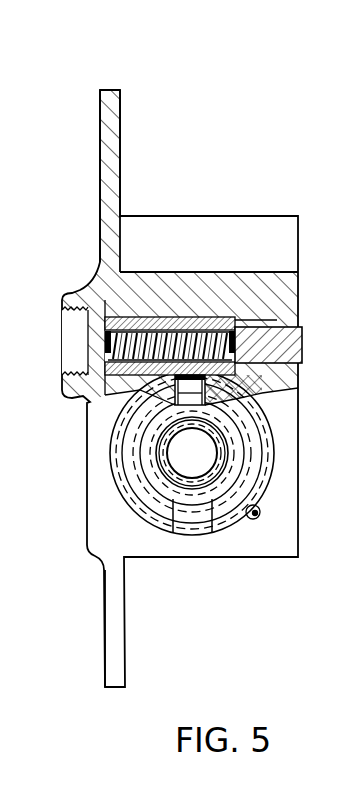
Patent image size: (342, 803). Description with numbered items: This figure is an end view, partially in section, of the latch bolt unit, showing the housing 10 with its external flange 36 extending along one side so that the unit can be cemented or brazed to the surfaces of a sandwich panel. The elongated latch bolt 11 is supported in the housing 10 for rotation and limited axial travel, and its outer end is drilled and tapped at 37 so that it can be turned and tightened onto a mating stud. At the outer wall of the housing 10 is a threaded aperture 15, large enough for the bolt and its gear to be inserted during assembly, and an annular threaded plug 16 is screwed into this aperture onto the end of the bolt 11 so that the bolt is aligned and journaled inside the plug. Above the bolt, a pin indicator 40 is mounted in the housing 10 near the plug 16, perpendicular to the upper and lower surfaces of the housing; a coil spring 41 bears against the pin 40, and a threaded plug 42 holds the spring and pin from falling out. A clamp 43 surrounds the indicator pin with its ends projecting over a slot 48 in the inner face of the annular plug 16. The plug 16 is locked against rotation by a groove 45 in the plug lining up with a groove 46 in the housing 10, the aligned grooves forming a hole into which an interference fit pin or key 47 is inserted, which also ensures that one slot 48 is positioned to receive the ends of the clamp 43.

The housing 10 is at (117, 622).
The latch bolt 11 is at (158, 480).
The threaded aperture 15 is at (227, 527).
The annular threaded plug 16 is at (167, 513).
The external flange 36 is at (114, 132).
The drilled and tapped outer end 37 is at (212, 445).
The pin indicator 40 is at (298, 350).
The coil spring 41 is at (213, 325).
The threaded plug 42 is at (75, 364).
The clamp 43 is at (178, 320).
The groove 45 is at (145, 390).
The groove 46 is at (258, 506).
The pin or key 47 is at (258, 517).
The slot 48 is at (218, 408).